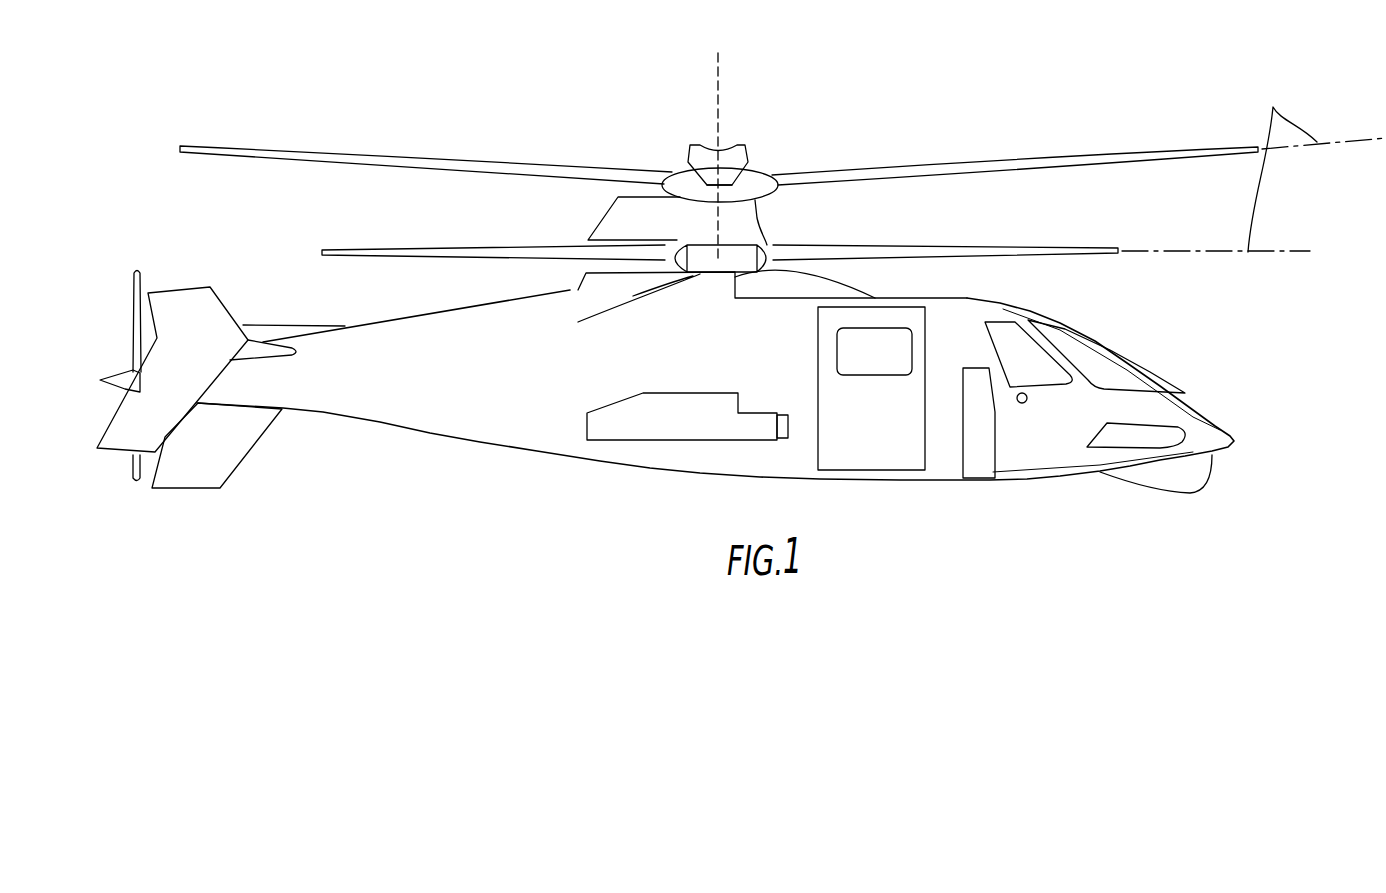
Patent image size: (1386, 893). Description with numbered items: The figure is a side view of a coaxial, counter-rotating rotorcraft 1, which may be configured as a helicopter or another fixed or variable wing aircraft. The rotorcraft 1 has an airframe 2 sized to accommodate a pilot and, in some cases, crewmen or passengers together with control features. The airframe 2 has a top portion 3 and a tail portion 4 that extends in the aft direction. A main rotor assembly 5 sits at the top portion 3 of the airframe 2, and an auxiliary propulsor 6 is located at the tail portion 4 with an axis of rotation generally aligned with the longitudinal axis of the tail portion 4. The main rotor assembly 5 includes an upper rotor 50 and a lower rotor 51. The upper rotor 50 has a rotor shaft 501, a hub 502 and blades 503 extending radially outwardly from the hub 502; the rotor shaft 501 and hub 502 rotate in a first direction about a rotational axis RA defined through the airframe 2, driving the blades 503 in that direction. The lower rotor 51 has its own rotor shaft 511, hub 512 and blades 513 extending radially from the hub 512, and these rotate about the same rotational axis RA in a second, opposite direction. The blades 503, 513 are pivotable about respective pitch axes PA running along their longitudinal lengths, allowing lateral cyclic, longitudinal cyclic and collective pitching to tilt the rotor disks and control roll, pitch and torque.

The coaxial rotorcraft 1 is at (1152, 526).
The airframe 2 is at (950, 452).
The top portion 3 is at (734, 340).
The tail portion 4 is at (360, 388).
The main rotor assembly 5 is at (754, 178).
The auxiliary propulsor 6 is at (113, 388).
The upper rotor 50 is at (180, 147).
The lower rotor 51 is at (322, 250).
The rotor shaft 501 is at (696, 215).
The hub 502 is at (729, 178).
The blades 503 is at (902, 170).
The rotor shaft 511 is at (580, 321).
The hub 512 is at (677, 245).
The blades 513 is at (902, 252).
The rotational axis RA is at (720, 73).
The pitch axis PA is at (1254, 161).